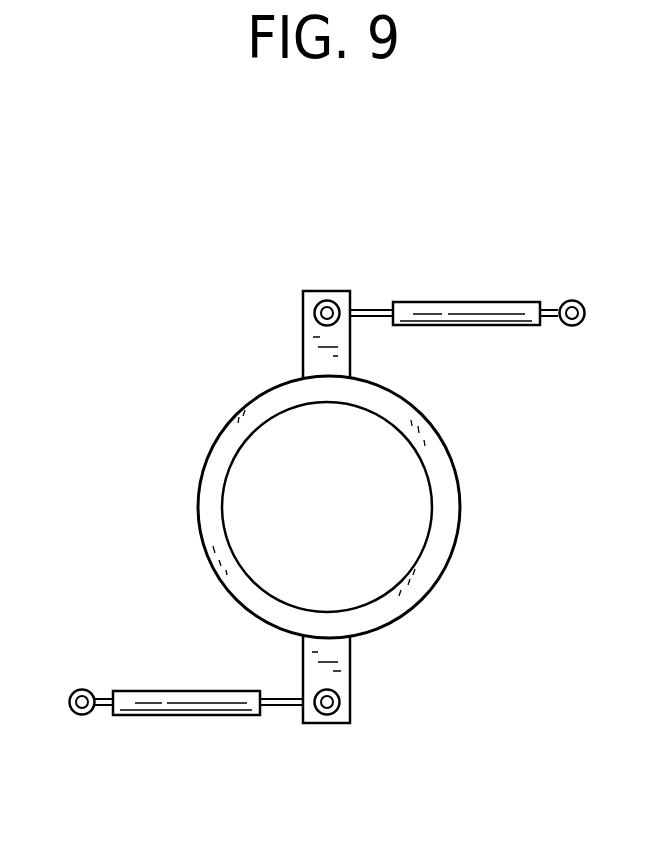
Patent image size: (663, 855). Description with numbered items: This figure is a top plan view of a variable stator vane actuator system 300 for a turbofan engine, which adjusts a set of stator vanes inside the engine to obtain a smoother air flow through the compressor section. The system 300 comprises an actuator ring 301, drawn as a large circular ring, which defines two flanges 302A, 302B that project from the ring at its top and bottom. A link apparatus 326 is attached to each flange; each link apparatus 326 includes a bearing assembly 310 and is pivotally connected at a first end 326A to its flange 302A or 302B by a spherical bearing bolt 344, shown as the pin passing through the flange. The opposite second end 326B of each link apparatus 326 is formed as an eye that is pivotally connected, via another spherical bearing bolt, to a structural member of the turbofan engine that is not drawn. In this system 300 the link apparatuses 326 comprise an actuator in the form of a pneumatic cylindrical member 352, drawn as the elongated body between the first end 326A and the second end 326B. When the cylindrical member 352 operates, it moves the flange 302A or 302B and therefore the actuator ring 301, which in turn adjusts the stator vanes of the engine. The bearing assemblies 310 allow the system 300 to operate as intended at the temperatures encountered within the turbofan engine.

The VSV actuator system 300 is at (178, 265).
The actuator ring 301 is at (198, 503).
The flange 302A is at (313, 358).
The flange 302B is at (340, 670).
The bearing assembly 310 is at (324, 299).
The spherical bearing bolt 344 is at (315, 312).
The link apparatus 326 is at (316, 514).
The first end 326A is at (370, 331).
The second end 326B is at (568, 292).
The pneumatic cylindrical member 352 is at (500, 327).